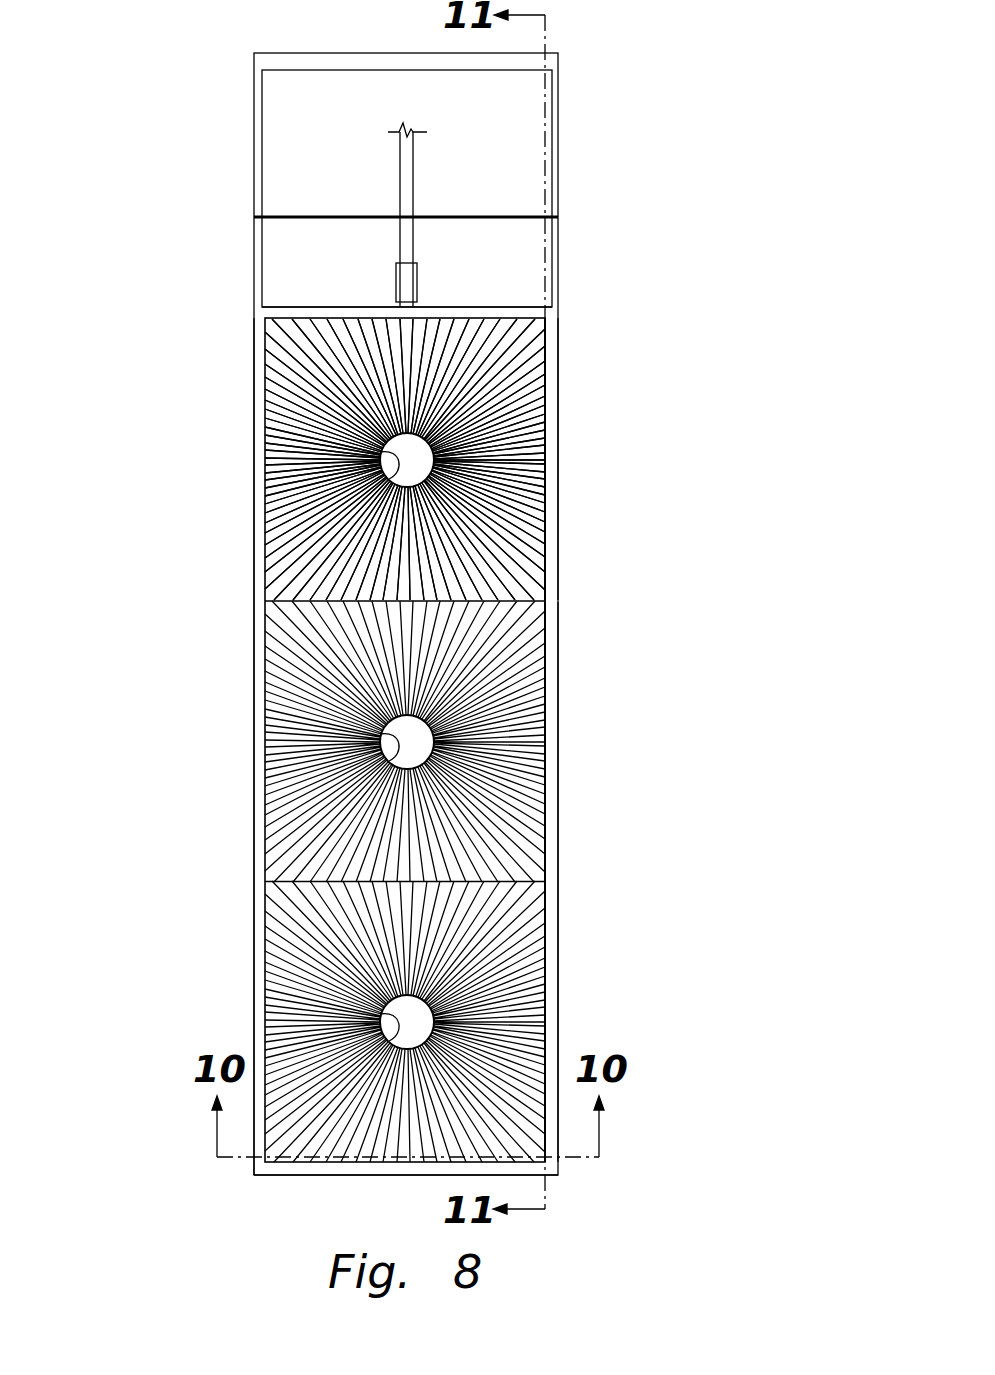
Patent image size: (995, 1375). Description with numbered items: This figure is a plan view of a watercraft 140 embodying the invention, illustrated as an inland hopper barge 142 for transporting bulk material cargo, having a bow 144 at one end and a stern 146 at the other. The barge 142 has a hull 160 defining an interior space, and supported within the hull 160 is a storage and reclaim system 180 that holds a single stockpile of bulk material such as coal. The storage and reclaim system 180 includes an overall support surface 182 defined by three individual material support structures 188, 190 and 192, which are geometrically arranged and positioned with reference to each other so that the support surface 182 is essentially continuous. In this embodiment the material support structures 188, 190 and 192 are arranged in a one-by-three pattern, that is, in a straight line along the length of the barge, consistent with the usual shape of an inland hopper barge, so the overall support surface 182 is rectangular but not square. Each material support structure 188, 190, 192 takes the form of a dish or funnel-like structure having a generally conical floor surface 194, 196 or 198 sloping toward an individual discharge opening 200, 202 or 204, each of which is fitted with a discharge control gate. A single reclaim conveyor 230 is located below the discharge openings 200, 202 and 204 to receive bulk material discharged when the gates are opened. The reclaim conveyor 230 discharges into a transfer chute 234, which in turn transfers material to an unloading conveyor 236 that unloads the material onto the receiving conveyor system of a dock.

The watercraft 140 is at (680, 212).
The bow 144 is at (222, 98).
The unloading conveyor 236 is at (398, 168).
The transfer chute 234 is at (396, 275).
The reclaim conveyor 230 is at (399, 303).
The support surface 182 is at (276, 662).
The storage and reclaim system 180 is at (206, 747).
The conical floor surface 198 is at (497, 348).
The material support structure 192 is at (540, 487).
The discharge opening 204 is at (380, 458).
The inland hopper barge 142 is at (555, 432).
The conical floor surface 196 is at (505, 683).
The material support structure 190 is at (510, 742).
The discharge opening 202 is at (382, 750).
The hull 160 is at (557, 826).
The conical floor surface 194 is at (497, 937).
The material support structure 188 is at (517, 975).
The discharge opening 200 is at (380, 1017).
The stern 146 is at (200, 1190).